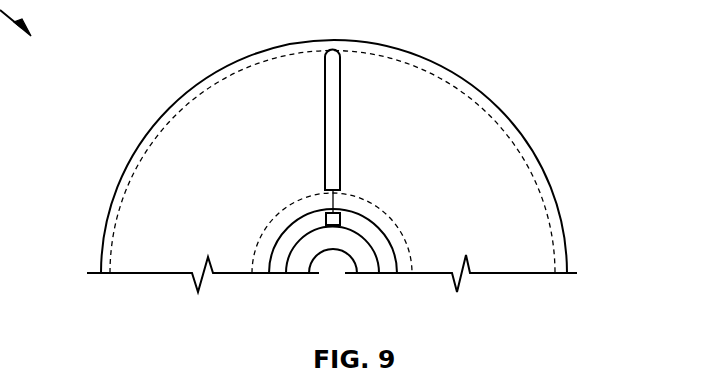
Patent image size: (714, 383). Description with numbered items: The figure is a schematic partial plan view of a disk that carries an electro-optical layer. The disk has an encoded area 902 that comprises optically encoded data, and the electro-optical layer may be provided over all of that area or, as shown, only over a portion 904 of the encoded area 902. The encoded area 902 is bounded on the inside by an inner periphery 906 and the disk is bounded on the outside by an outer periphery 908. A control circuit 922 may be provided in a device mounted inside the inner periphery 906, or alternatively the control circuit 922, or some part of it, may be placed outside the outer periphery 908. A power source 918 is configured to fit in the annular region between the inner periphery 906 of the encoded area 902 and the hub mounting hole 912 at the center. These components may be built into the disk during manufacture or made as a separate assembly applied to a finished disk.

The encoded area 902 is at (190, 112).
The portion of the encoded area 904 is at (325, 73).
The inner periphery 906 is at (253, 262).
The outer periphery 908 is at (556, 245).
The hub mounting hole 912 is at (343, 257).
The power source 918 is at (393, 272).
The control circuit 922 is at (342, 220).